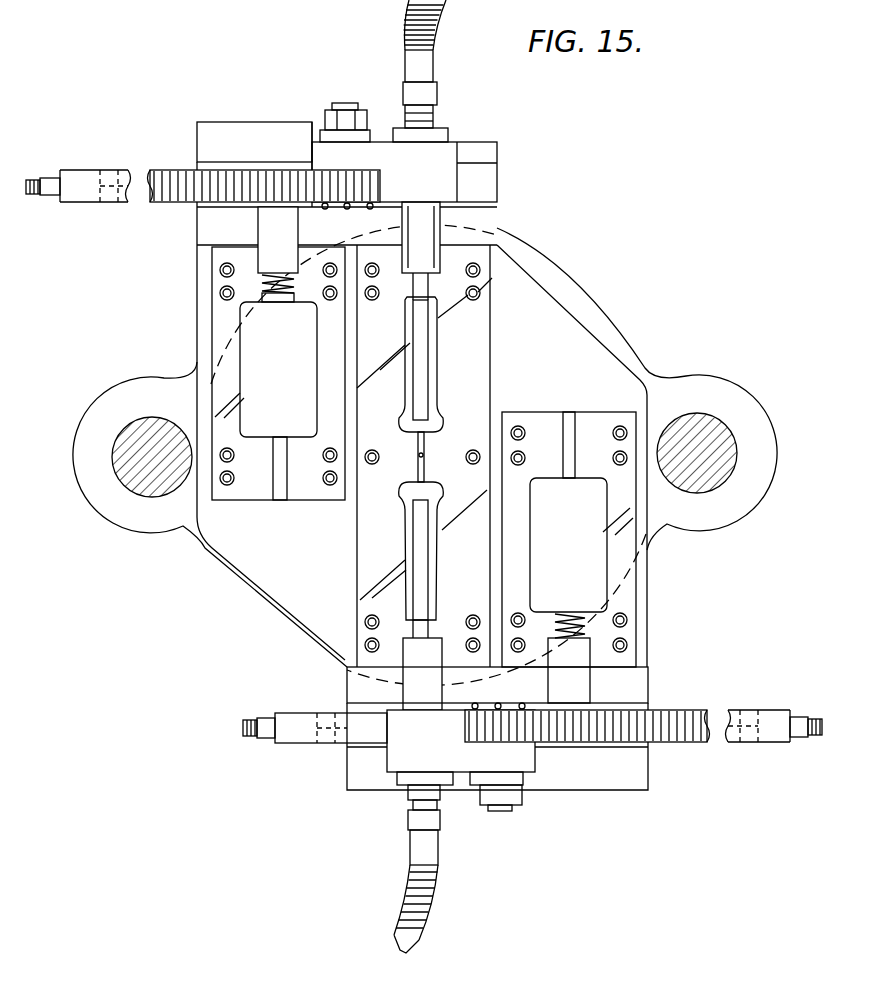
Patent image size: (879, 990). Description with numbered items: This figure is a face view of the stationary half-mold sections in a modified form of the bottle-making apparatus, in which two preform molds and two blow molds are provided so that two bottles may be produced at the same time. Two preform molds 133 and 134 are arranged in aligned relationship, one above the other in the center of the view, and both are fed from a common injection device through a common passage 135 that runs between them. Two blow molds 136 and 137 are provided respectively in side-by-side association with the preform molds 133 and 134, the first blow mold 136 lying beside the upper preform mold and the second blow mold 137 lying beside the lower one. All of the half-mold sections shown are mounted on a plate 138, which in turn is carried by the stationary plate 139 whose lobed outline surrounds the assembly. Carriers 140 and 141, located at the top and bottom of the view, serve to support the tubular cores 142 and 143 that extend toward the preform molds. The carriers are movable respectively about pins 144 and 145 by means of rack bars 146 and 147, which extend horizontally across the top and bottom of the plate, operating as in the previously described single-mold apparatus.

The preform mold 133 is at (478, 361).
The preform mold 134 is at (370, 561).
The common passage 135 is at (425, 449).
The blow mold 136 is at (225, 350).
The blow mold 137 is at (625, 562).
The plate 138 is at (588, 333).
The stationary plate 139 is at (577, 283).
The carrier 140 is at (455, 143).
The carrier 141 is at (530, 763).
The tubular core 142 is at (422, 333).
The tubular core 143 is at (421, 571).
The pin 144 is at (347, 103).
The pin 145 is at (510, 805).
The rack bar 146 is at (164, 168).
The rack bar 147 is at (677, 745).